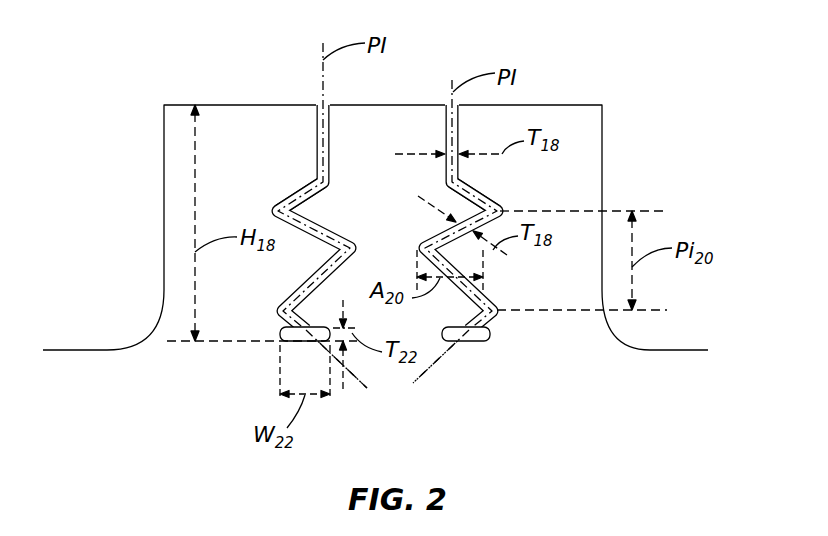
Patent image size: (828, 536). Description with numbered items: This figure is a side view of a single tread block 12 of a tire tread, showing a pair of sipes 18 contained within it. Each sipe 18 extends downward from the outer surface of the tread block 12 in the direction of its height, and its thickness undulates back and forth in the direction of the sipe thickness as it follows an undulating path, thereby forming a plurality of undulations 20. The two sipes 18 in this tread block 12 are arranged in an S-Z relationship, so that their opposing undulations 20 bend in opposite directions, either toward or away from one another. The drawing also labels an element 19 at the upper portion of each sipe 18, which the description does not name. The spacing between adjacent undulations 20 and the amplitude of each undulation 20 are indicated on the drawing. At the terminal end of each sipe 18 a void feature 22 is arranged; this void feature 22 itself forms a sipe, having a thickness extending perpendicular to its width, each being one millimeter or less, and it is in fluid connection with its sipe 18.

The tread block 12 is at (580, 108).
The sipe 18 is at (332, 124).
The channel in fin 19 is at (325, 148).
The undulation 20 is at (280, 198).
The void feature 22 is at (293, 343).